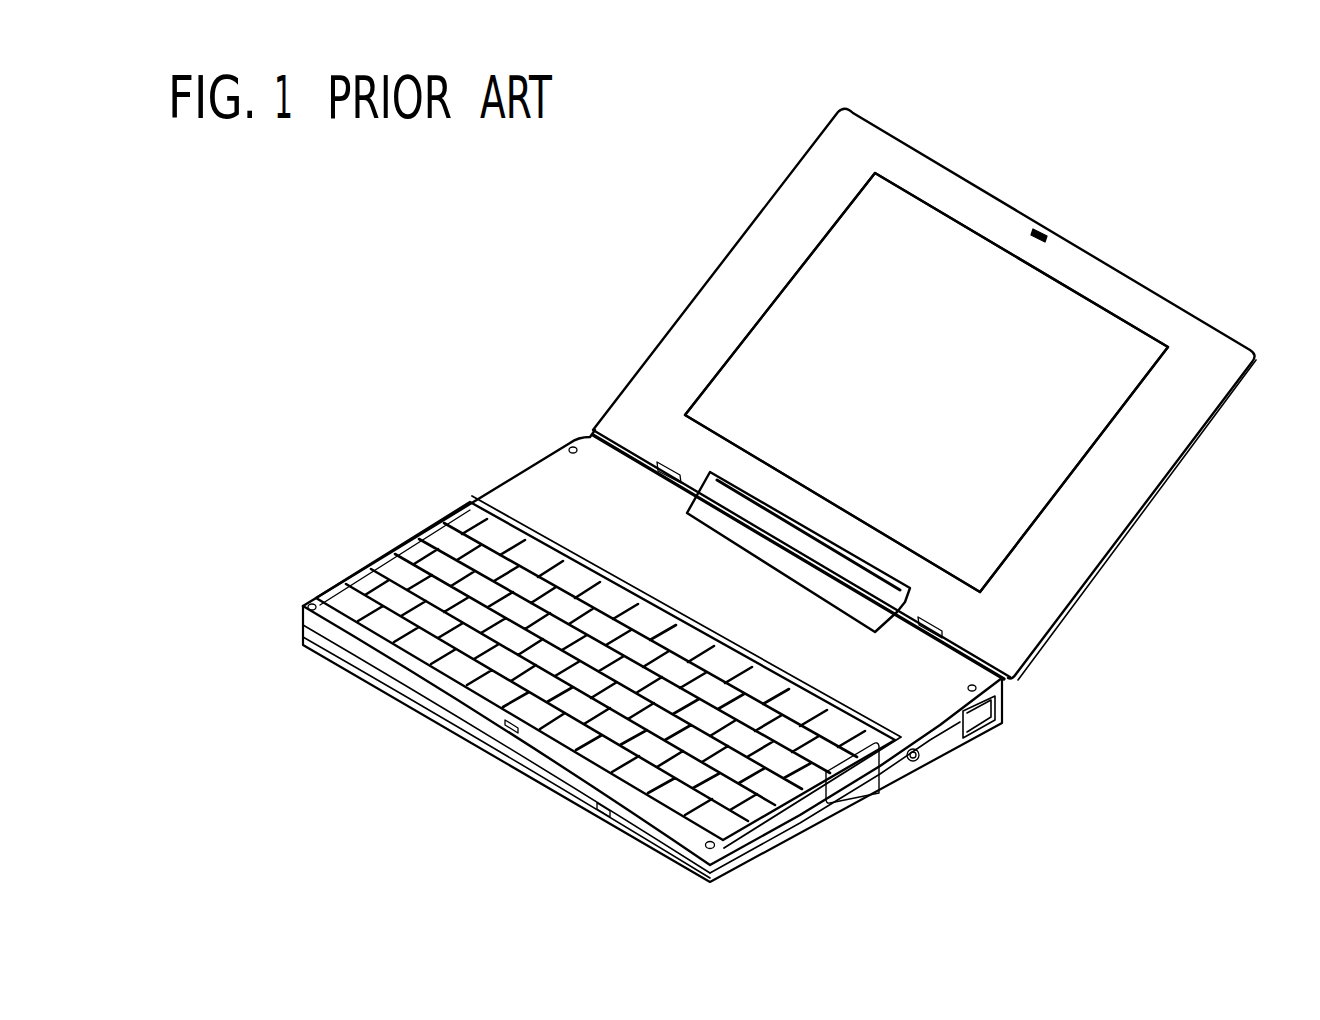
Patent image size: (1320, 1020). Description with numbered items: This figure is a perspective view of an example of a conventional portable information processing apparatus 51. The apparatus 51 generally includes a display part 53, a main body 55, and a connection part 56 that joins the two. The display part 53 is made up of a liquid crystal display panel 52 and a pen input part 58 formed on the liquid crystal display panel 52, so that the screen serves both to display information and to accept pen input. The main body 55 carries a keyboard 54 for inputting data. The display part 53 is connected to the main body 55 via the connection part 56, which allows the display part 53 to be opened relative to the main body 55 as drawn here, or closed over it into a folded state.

The portable information processing apparatus 51 is at (781, 52).
The liquid crystal display panel 52 is at (1070, 315).
The pen input part 58 is at (926, 382).
The display part 53 is at (1150, 462).
The keyboard 54 is at (400, 573).
The main body 55 is at (530, 493).
The connection part 56 is at (958, 608).